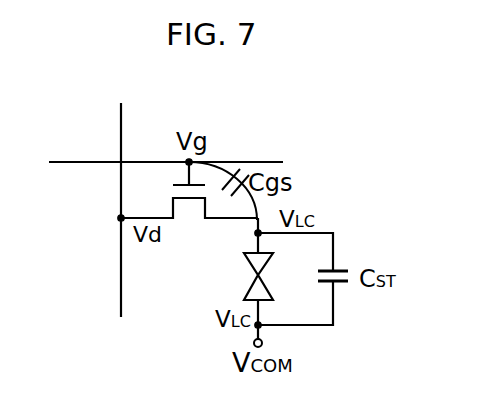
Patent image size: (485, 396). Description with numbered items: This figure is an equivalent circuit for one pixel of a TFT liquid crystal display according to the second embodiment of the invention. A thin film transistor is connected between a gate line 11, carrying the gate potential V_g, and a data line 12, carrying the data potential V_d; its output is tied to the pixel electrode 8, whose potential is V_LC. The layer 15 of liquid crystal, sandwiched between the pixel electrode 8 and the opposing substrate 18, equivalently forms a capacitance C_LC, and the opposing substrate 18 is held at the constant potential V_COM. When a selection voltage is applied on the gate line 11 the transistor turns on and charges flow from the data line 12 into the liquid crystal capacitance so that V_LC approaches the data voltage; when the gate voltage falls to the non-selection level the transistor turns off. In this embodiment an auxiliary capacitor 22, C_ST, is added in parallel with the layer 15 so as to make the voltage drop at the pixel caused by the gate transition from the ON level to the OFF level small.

The pixel electrode 8 is at (255, 220).
The gate line 11 is at (68, 162).
The data line 12 is at (123, 113).
The layer of liquid crystal 15 is at (249, 287).
The opposing substrate 18 is at (262, 343).
The auxiliary capacitor 22 is at (340, 283).